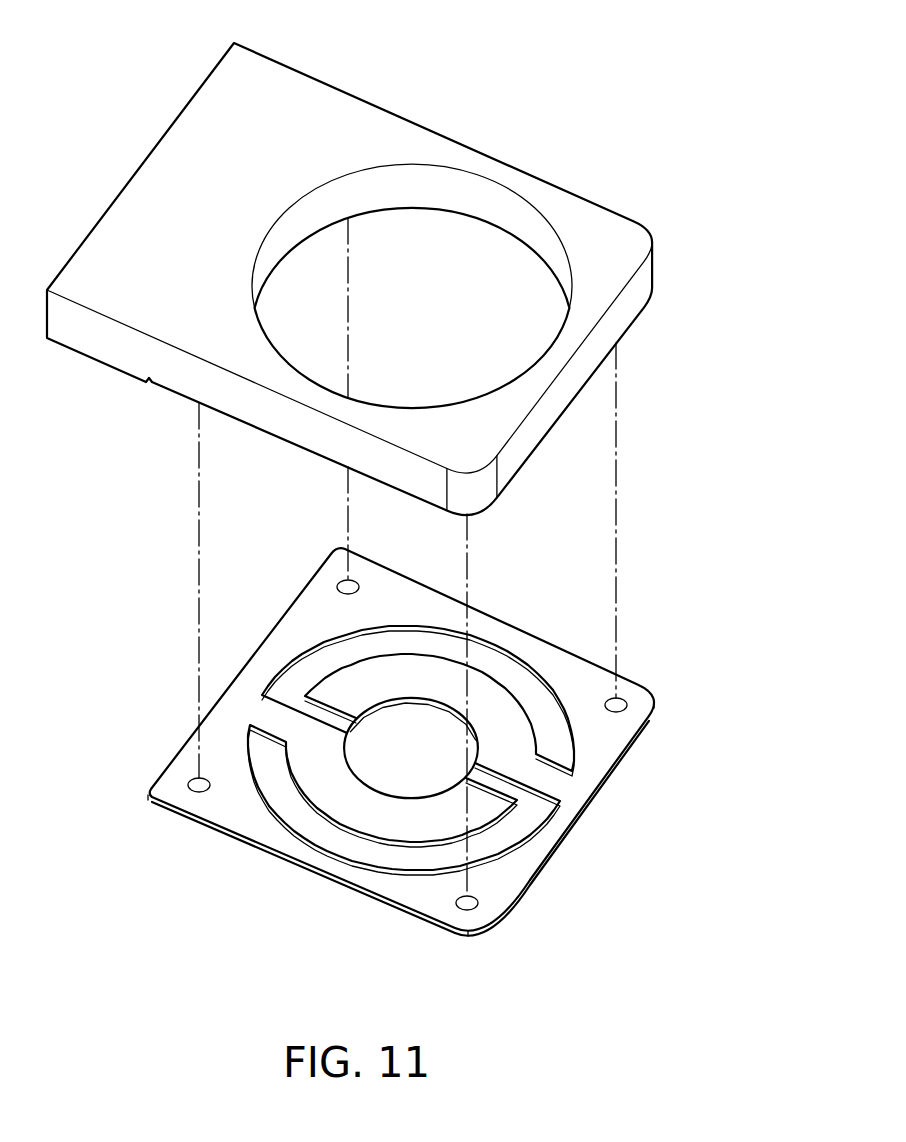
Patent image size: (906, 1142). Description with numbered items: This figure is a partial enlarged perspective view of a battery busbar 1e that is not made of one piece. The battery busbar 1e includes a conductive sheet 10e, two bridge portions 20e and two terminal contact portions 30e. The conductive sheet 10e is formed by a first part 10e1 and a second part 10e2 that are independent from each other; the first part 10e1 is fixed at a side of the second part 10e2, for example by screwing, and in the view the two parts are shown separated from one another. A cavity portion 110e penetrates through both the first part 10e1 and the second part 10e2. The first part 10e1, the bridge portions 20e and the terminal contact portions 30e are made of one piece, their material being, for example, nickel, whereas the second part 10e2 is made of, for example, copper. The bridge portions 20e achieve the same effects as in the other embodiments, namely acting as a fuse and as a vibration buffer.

The battery busbar 1e is at (592, 41).
The conductive sheet 10e is at (713, 380).
The first part 10e1 is at (640, 697).
The second part 10e2 is at (627, 313).
The cavity portion 110e is at (497, 265).
The bridge portions 20e is at (277, 712).
The terminal contact portions 30e is at (492, 705).